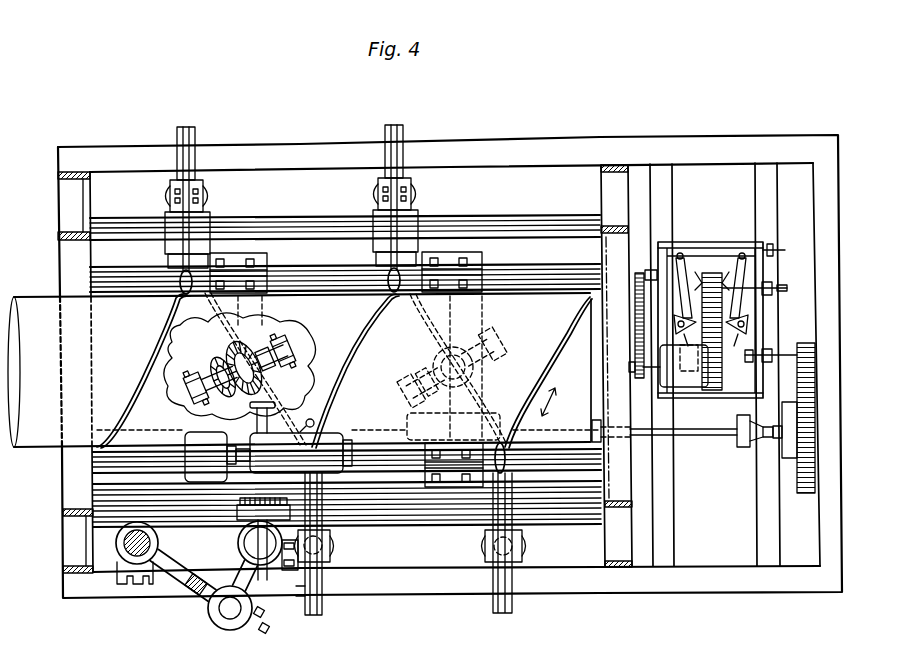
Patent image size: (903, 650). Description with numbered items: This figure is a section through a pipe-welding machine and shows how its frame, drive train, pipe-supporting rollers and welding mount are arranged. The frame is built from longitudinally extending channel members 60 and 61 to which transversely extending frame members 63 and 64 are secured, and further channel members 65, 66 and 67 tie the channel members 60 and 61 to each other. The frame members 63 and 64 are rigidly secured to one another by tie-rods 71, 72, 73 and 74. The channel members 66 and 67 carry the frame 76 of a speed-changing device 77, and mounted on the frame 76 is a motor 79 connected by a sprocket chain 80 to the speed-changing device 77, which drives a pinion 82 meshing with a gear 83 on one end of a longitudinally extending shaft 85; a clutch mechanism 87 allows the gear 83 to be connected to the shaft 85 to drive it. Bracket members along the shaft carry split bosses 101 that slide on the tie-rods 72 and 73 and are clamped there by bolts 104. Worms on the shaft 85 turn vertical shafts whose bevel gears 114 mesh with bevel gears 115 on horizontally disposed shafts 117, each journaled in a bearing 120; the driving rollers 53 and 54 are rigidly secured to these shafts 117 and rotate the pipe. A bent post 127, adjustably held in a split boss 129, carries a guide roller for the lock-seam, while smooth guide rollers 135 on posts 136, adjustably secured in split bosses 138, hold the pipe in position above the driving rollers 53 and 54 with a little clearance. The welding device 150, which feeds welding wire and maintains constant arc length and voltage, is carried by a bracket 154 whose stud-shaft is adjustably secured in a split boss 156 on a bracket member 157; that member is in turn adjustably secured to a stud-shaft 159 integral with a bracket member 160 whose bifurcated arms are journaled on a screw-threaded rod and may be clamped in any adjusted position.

The driving roller 53 is at (296, 402).
The driving roller 54 is at (479, 336).
The channel member 60 is at (500, 146).
The channel member 61 is at (567, 586).
The frame member 63 is at (67, 200).
The frame member 64 is at (619, 186).
The channel member 65 is at (667, 518).
The channel member 66 is at (776, 533).
The channel member 67 is at (834, 500).
The tie-rod 71 is at (498, 220).
The tie-rod 72 is at (305, 269).
The tie-rod 73 is at (386, 488).
The tie-rod 74 is at (447, 520).
The frame 76 is at (705, 241).
The speed-changing device 77 is at (712, 262).
The motor 79 is at (683, 382).
The sprocket chain 80 is at (637, 360).
The pinion 82 is at (801, 343).
The gear 83 is at (815, 392).
The shaft 85 is at (692, 434).
The clutch mechanism 87 is at (765, 432).
The split boss 101 is at (246, 255).
The bolt 104 is at (223, 258).
The bevel gear 114 is at (220, 337).
The bevel gear 115 is at (223, 362).
The horizontally disposed shaft 117 is at (275, 337).
The bearing 120 is at (292, 350).
The bent post 127 is at (323, 607).
The split boss 129 is at (332, 558).
The guide roller 135 is at (165, 305).
The post 136 is at (196, 134).
The split boss 138 is at (170, 189).
The welding device 150 is at (350, 436).
The bracket 154 is at (240, 521).
The split boss 156 is at (293, 600).
The bracket member 157 is at (263, 567).
The stud-shaft 159 is at (224, 612).
The bracket member 160 is at (180, 580).